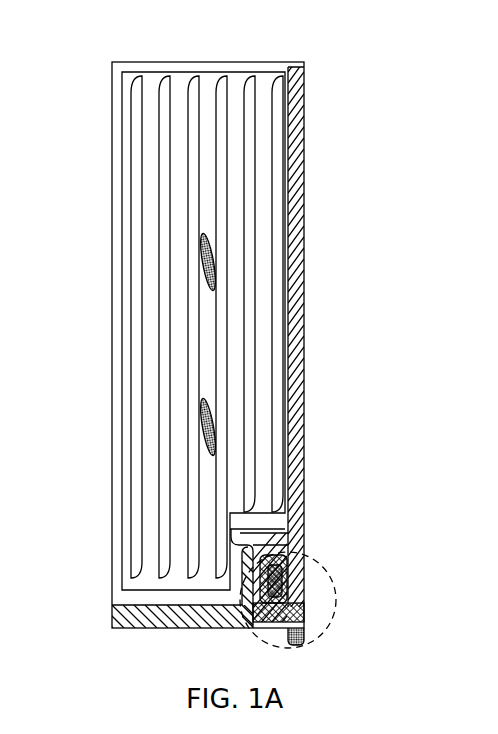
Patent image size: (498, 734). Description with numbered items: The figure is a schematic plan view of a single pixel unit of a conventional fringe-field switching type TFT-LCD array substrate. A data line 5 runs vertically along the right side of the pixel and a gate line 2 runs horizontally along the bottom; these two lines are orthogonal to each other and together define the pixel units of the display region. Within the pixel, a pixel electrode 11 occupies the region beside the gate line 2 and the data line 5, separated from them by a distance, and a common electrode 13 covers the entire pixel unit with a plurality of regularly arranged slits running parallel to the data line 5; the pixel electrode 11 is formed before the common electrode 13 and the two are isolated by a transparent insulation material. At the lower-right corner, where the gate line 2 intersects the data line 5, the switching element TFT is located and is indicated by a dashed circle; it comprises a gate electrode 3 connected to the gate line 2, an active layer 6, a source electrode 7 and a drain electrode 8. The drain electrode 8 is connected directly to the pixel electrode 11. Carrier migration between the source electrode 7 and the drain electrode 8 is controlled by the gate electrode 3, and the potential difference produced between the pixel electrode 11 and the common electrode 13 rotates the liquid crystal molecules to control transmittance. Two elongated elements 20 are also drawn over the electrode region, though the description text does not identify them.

The gate line 2 is at (113, 617).
The gate electrode 3 is at (244, 614).
The data line 5 is at (300, 487).
The active layer 6 is at (290, 581).
The source electrode 7 is at (296, 619).
The drain electrode 8 is at (284, 561).
The pixel electrode 11 is at (122, 262).
The common electrode 13 is at (112, 188).
The column spacer 20 is at (214, 272).
The switching element TFT is at (328, 600).